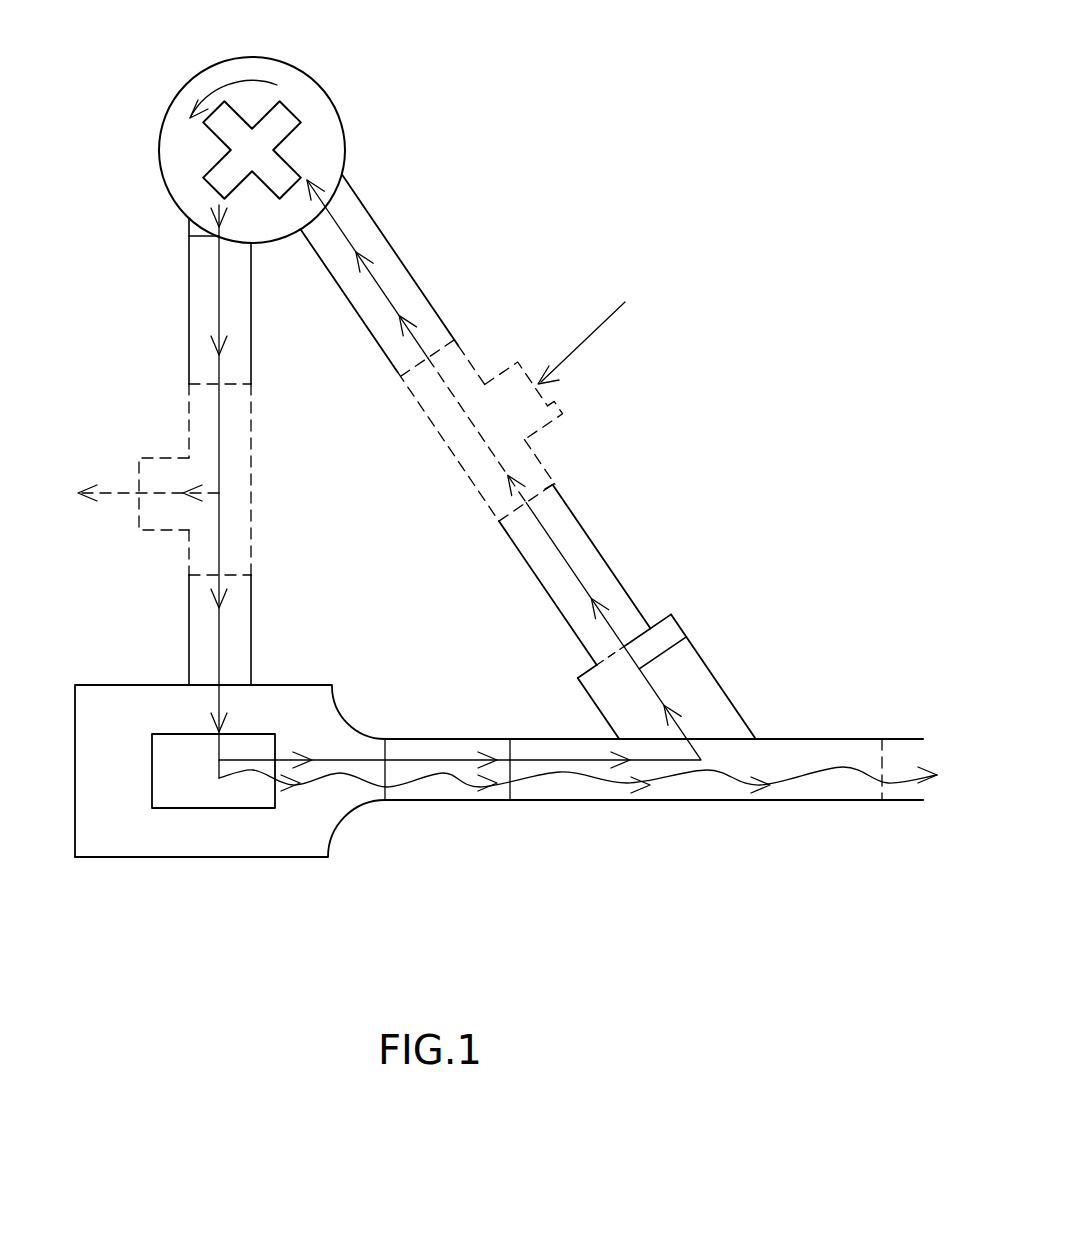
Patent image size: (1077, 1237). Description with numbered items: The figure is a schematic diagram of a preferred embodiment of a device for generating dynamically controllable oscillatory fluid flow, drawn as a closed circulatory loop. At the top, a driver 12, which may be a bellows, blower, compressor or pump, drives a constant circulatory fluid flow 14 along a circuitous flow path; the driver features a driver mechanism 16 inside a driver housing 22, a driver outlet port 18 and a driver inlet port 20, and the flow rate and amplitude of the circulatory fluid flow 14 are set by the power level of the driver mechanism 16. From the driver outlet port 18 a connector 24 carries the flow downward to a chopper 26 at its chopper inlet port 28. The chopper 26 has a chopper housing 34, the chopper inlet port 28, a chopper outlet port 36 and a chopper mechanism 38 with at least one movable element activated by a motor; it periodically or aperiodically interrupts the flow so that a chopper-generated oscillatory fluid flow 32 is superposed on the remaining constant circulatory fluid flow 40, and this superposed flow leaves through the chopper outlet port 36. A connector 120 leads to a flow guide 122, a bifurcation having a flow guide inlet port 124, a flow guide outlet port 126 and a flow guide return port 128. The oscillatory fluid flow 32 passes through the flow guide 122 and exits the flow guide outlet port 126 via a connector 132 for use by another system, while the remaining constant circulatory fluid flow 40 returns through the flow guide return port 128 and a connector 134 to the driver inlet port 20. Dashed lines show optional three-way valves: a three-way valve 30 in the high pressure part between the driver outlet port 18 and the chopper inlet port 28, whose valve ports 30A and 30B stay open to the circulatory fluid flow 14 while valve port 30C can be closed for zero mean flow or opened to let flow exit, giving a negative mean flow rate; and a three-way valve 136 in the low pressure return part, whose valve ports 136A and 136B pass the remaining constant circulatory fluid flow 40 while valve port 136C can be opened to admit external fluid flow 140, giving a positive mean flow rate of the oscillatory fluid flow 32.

The driver 12 is at (372, 27).
The circulatory fluid flow 14 is at (219, 310).
The driver mechanism 16 is at (245, 139).
The driver outlet port 18 is at (205, 243).
The driver inlet port 20 is at (343, 188).
The driver housing 22 is at (343, 115).
The connector 24 is at (251, 318).
The chopper 26 is at (230, 806).
The chopper inlet port 28 is at (207, 685).
The three-way valve 30 is at (248, 479).
The valve port 30A is at (250, 386).
The valve port 30B is at (250, 575).
The valve port 30C is at (139, 466).
The oscillatory fluid flow 32 is at (340, 776).
The chopper housing 34 is at (240, 857).
The chopper outlet port 36 is at (386, 739).
The chopper mechanism 38 is at (213, 771).
The remaining constant circulatory fluid flow 40 is at (383, 292).
The connector 120 is at (452, 739).
The flow guide 122 is at (708, 660).
The flow guide inlet port 124 is at (512, 739).
The flow guide outlet port 126 is at (882, 750).
The flow guide return port 128 is at (648, 634).
The connector 132 is at (898, 739).
The connector 134 is at (370, 333).
The three-way valve 136 is at (475, 430).
The valve port 136A is at (548, 488).
The valve port 136B is at (440, 343).
The valve port 136C is at (556, 406).
The external fluid flow 140 is at (606, 329).